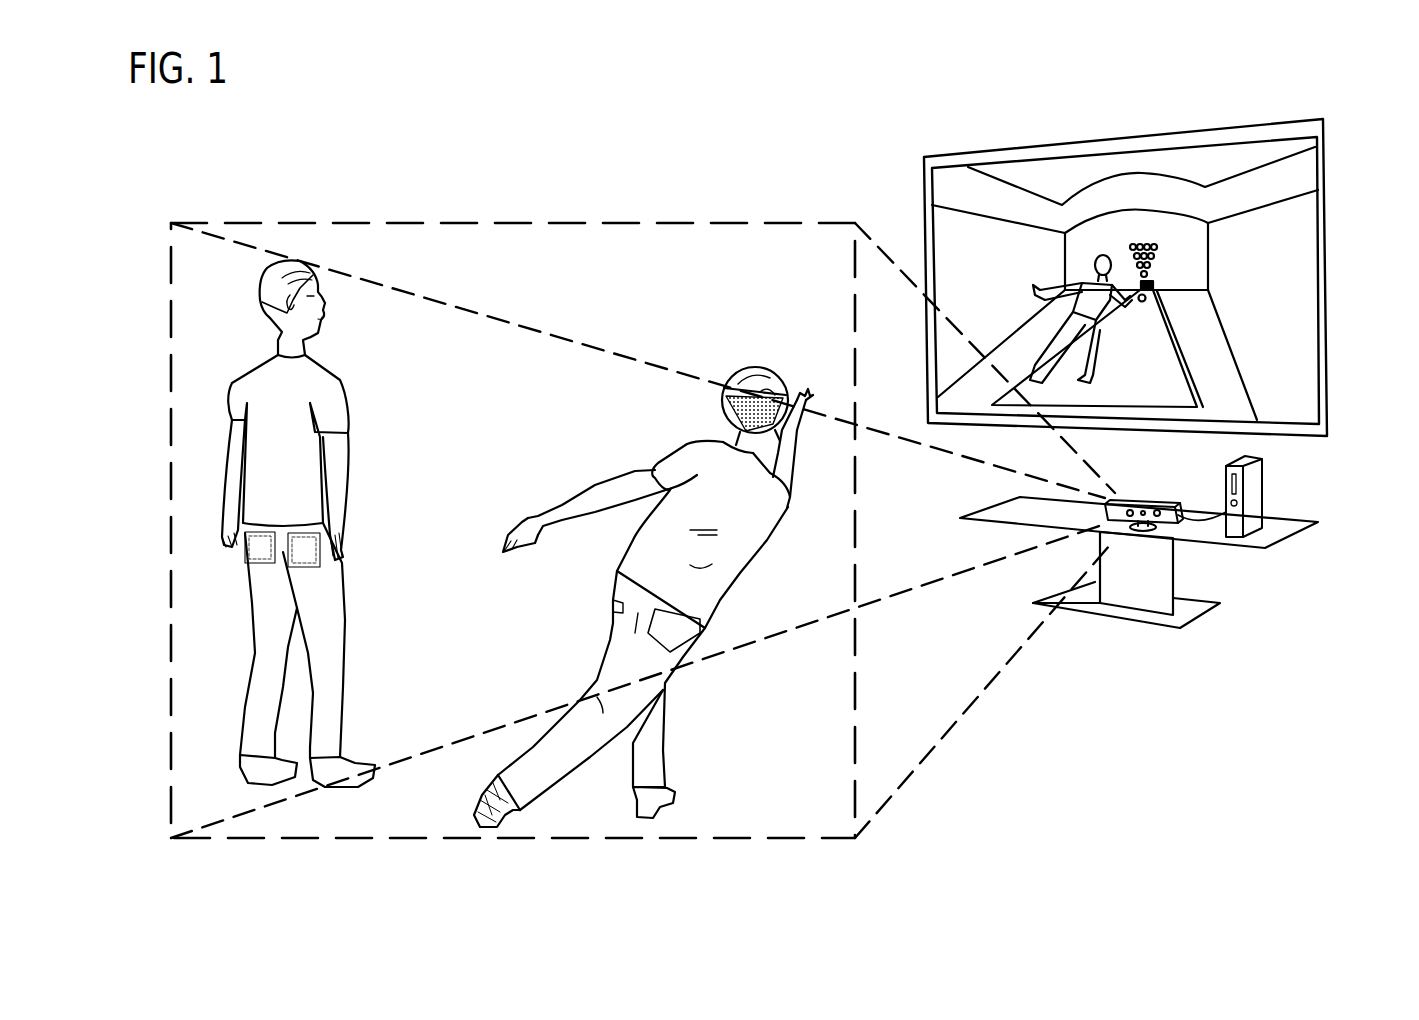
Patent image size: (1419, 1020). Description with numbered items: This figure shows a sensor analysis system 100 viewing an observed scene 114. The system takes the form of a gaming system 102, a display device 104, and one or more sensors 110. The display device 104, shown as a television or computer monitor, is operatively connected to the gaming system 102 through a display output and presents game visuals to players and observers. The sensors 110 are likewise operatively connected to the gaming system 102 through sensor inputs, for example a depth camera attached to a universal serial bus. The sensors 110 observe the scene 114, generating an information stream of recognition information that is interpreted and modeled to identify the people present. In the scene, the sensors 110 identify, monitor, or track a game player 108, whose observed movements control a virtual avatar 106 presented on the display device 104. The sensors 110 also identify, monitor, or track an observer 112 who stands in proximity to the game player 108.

The sensor analysis system 100 is at (294, 178).
The gaming system 102 is at (1262, 490).
The display device 104 is at (1325, 210).
The virtual avatar 106 is at (1050, 290).
The game player 108 is at (681, 453).
The sensors 110 is at (1147, 500).
The observer 112 is at (250, 379).
The observed scene 114 is at (503, 222).